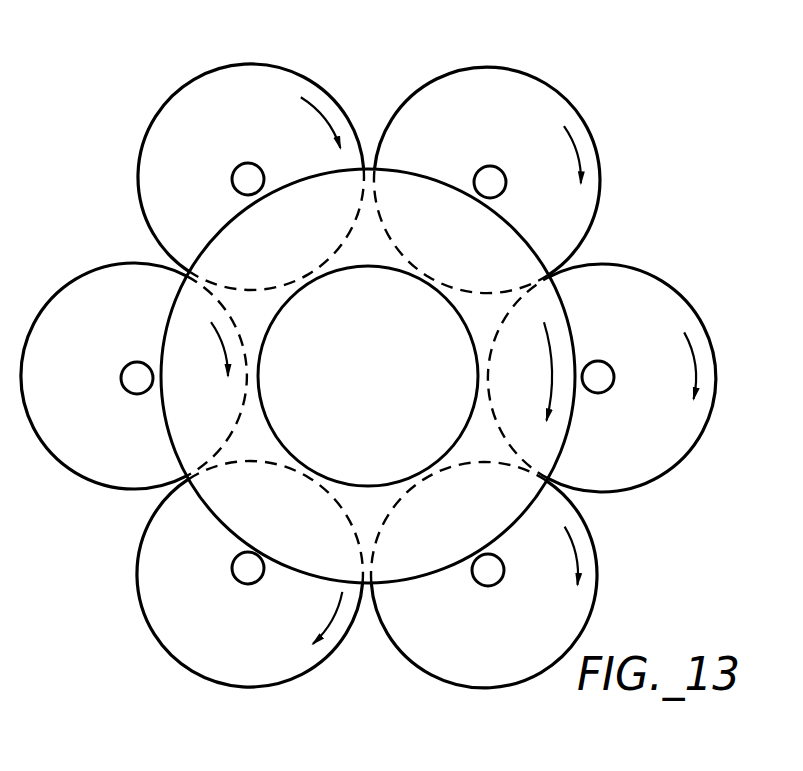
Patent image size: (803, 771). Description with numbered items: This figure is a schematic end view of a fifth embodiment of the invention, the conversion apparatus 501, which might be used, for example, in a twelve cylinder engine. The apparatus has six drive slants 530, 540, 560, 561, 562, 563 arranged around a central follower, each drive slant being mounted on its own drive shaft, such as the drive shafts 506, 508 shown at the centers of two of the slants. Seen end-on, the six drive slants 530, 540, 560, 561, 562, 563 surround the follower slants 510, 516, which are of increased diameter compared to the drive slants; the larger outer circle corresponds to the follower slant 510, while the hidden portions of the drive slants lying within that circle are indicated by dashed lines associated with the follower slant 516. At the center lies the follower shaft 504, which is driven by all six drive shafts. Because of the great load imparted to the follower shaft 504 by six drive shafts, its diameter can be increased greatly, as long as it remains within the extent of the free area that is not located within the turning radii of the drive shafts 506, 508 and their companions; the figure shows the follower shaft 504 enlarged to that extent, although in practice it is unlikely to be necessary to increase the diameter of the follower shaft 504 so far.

The conversion apparatus 501 is at (625, 177).
The follower shaft 504 is at (463, 328).
The drive shaft 506 is at (605, 392).
The drive shaft 508 is at (137, 360).
The follower slant 510 is at (525, 253).
The follower slant 516 is at (200, 287).
The drive slant 530 is at (652, 298).
The drive slant 540 is at (133, 480).
The drive slant 560 is at (538, 103).
The drive slant 561 is at (587, 540).
The drive slant 562 is at (285, 87).
The drive slant 563 is at (157, 585).